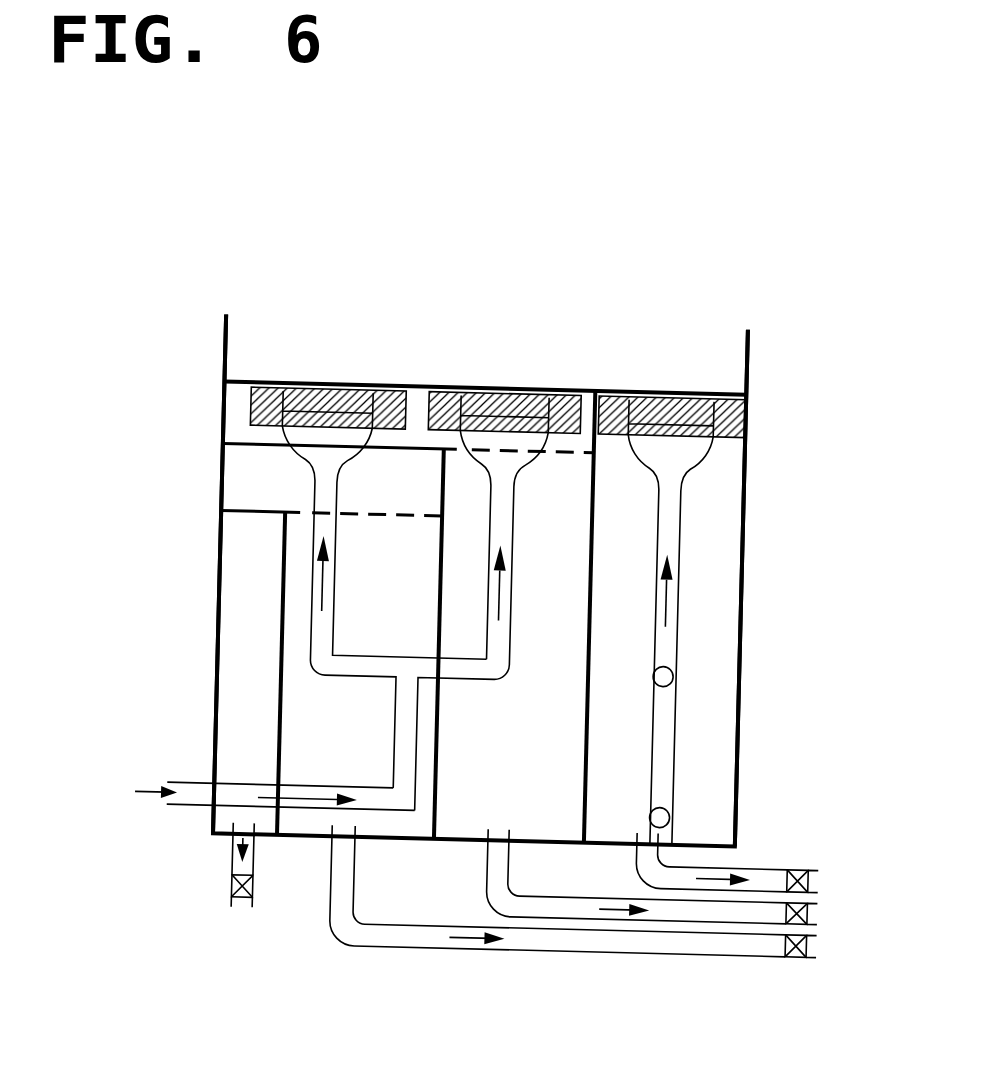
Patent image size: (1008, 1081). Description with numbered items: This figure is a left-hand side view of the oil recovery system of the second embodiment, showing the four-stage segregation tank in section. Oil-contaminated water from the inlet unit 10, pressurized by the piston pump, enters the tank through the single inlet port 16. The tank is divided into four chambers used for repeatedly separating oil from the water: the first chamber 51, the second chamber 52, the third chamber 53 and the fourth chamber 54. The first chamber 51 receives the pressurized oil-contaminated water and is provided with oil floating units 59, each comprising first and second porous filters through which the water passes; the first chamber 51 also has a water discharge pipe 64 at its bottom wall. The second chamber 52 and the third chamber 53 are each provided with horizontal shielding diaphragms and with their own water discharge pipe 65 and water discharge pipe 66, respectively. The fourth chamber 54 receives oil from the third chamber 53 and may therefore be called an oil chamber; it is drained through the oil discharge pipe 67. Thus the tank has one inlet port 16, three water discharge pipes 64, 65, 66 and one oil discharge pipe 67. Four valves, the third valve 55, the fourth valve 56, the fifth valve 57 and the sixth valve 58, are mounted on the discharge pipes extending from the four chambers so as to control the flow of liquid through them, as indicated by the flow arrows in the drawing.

The oil-contaminated water inlet unit 10 is at (138, 791).
The inlet port 16 is at (195, 812).
The first chamber 51 is at (725, 727).
The second chamber 52 is at (524, 746).
The third chamber 53 is at (360, 750).
The fourth chamber 54 is at (218, 657).
The third valve 55 is at (803, 862).
The fourth valve 56 is at (813, 908).
The fifth valve 57 is at (813, 943).
The sixth valve 58 is at (238, 895).
The oil floating unit 59 is at (712, 466).
The water discharge pipe 64 is at (778, 862).
The water discharge pipe 65 is at (744, 918).
The water discharge pipe 66 is at (680, 950).
The oil discharge pipe 67 is at (260, 872).